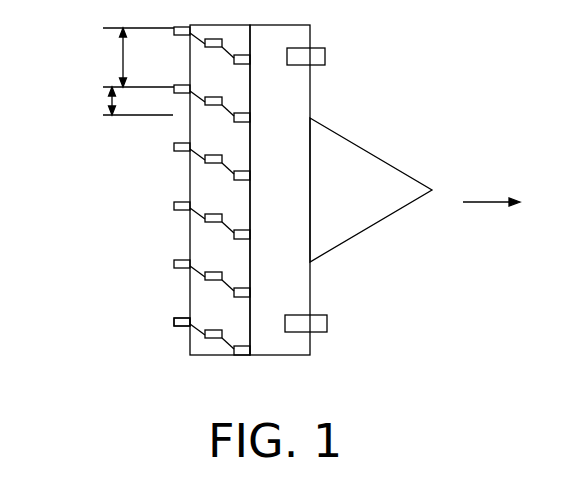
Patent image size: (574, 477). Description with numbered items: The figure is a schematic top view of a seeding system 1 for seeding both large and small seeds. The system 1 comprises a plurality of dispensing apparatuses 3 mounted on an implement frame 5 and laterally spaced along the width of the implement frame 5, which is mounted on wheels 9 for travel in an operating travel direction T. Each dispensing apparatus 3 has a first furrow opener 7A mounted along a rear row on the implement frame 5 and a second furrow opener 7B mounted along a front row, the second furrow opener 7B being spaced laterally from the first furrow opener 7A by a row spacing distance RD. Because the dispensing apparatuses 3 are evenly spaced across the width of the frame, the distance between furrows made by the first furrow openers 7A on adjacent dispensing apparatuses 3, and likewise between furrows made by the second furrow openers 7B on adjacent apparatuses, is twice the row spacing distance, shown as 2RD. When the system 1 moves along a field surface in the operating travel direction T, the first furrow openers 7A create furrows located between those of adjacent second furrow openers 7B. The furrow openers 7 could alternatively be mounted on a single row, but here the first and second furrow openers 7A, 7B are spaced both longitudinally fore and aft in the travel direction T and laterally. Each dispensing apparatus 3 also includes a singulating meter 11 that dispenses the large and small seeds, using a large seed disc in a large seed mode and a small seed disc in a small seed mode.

The seeding system 1 is at (264, 212).
The dispensing apparatus 3 is at (193, 342).
The implement frame 5 is at (310, 285).
The furrow openers 7 is at (173, 322).
The first furrow opener 7A is at (137, 324).
The second furrow opener 7B is at (242, 355).
The wheels 9 is at (327, 323).
The singulating meter 11 is at (210, 340).
The twice the row spacing distance 2RD is at (120, 55).
The row spacing distance RD is at (108, 100).
The operating travel direction T is at (491, 187).